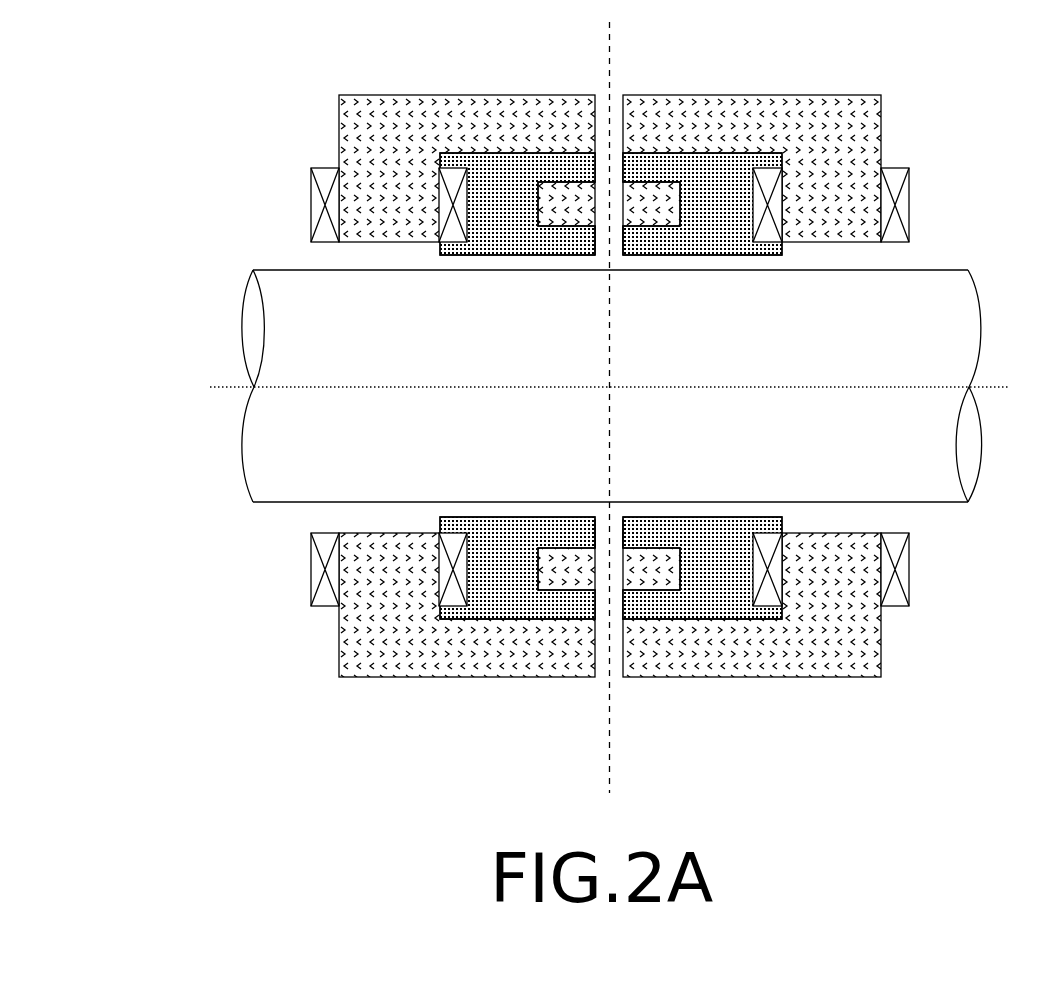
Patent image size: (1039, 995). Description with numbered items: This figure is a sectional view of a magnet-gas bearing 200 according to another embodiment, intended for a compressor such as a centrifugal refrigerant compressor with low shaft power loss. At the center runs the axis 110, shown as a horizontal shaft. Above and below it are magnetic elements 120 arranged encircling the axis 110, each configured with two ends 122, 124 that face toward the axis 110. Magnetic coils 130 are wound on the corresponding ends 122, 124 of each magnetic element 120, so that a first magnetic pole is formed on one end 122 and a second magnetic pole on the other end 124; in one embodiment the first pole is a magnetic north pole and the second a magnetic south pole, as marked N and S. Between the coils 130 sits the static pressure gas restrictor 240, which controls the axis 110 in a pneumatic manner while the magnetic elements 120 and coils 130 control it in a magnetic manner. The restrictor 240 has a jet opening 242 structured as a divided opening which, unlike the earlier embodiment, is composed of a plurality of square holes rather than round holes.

The axis 110 is at (258, 446).
The magnetic element 120 is at (375, 123).
The first end of magnetic element 122 is at (371, 200).
The second end of magnetic element 124 is at (851, 210).
The magnetic coil 130 is at (450, 168).
The magnet-gas bearing 200 is at (857, 872).
The static pressure gas restrictor 240 is at (513, 180).
The jet opening 242 is at (612, 262).